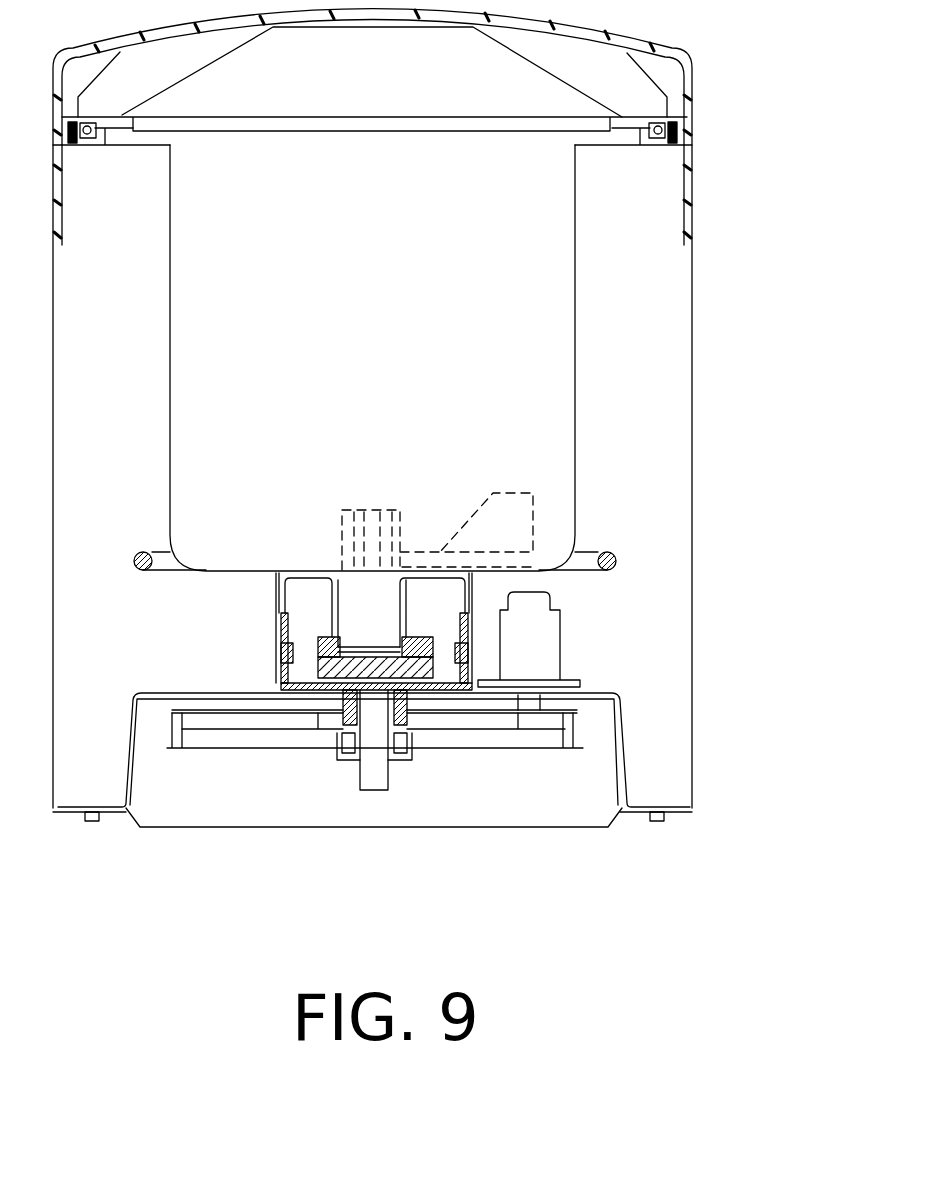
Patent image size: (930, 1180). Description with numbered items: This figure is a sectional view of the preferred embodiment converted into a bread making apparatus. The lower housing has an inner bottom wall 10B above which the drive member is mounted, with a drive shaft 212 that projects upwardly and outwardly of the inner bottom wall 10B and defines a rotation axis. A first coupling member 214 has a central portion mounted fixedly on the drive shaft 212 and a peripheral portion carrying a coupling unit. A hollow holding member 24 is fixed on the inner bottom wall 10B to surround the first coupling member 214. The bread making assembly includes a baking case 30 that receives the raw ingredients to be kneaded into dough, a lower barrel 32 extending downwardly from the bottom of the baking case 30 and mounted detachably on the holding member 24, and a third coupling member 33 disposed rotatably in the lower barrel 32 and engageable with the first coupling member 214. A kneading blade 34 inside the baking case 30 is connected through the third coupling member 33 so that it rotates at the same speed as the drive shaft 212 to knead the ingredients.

The baking case 30 is at (598, 327).
The lower barrel 32 is at (288, 650).
The third coupling member 33 is at (333, 637).
The kneading blade 34 is at (418, 550).
The hollow holding member 24 is at (474, 622).
The first coupling member 214 is at (415, 669).
The drive shaft 212 is at (376, 793).
The inner bottom wall 10B is at (152, 690).